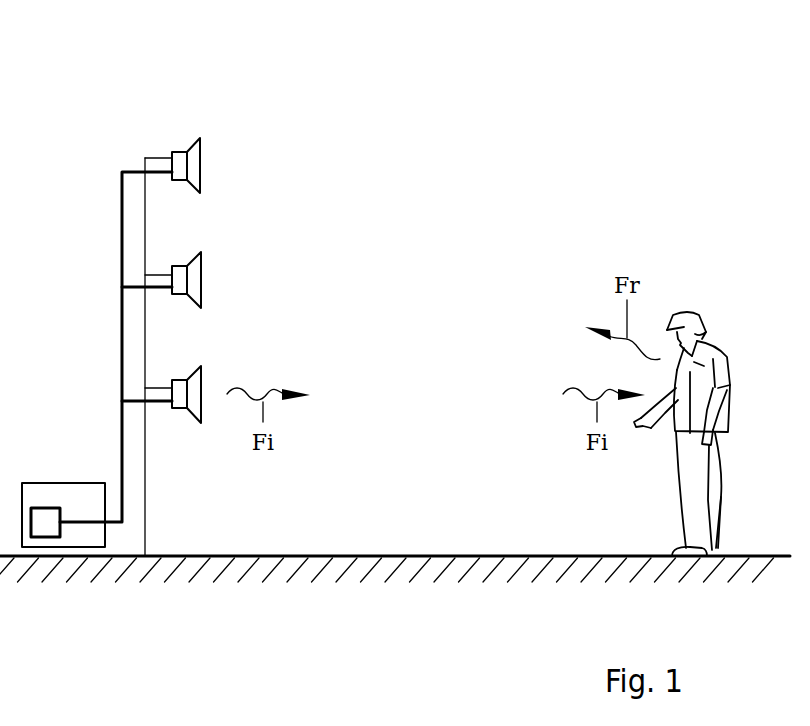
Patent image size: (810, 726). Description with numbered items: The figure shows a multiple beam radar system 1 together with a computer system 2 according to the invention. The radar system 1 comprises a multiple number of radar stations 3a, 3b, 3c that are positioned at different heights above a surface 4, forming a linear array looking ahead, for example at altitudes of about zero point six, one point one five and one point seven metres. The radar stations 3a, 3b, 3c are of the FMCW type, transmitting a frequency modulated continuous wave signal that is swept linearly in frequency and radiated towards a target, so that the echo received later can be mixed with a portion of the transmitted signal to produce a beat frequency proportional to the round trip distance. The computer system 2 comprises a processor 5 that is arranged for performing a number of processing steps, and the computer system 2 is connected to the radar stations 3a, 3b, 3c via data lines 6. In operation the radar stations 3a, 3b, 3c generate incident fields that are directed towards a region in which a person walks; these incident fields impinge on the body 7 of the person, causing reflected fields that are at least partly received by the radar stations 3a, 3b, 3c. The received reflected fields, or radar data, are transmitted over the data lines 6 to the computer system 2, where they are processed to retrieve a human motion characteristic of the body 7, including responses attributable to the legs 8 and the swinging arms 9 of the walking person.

The multiple beam radar system 1 is at (100, 77).
The computer system 2 is at (83, 483).
The radar station 3a is at (202, 143).
The radar station 3b is at (202, 258).
The radar station 3c is at (202, 374).
The surface 4 is at (418, 555).
The processor 5 is at (39, 508).
The data lines 6 is at (122, 336).
The body 7 is at (698, 378).
The legs 8 is at (697, 497).
The arms 9 is at (713, 416).